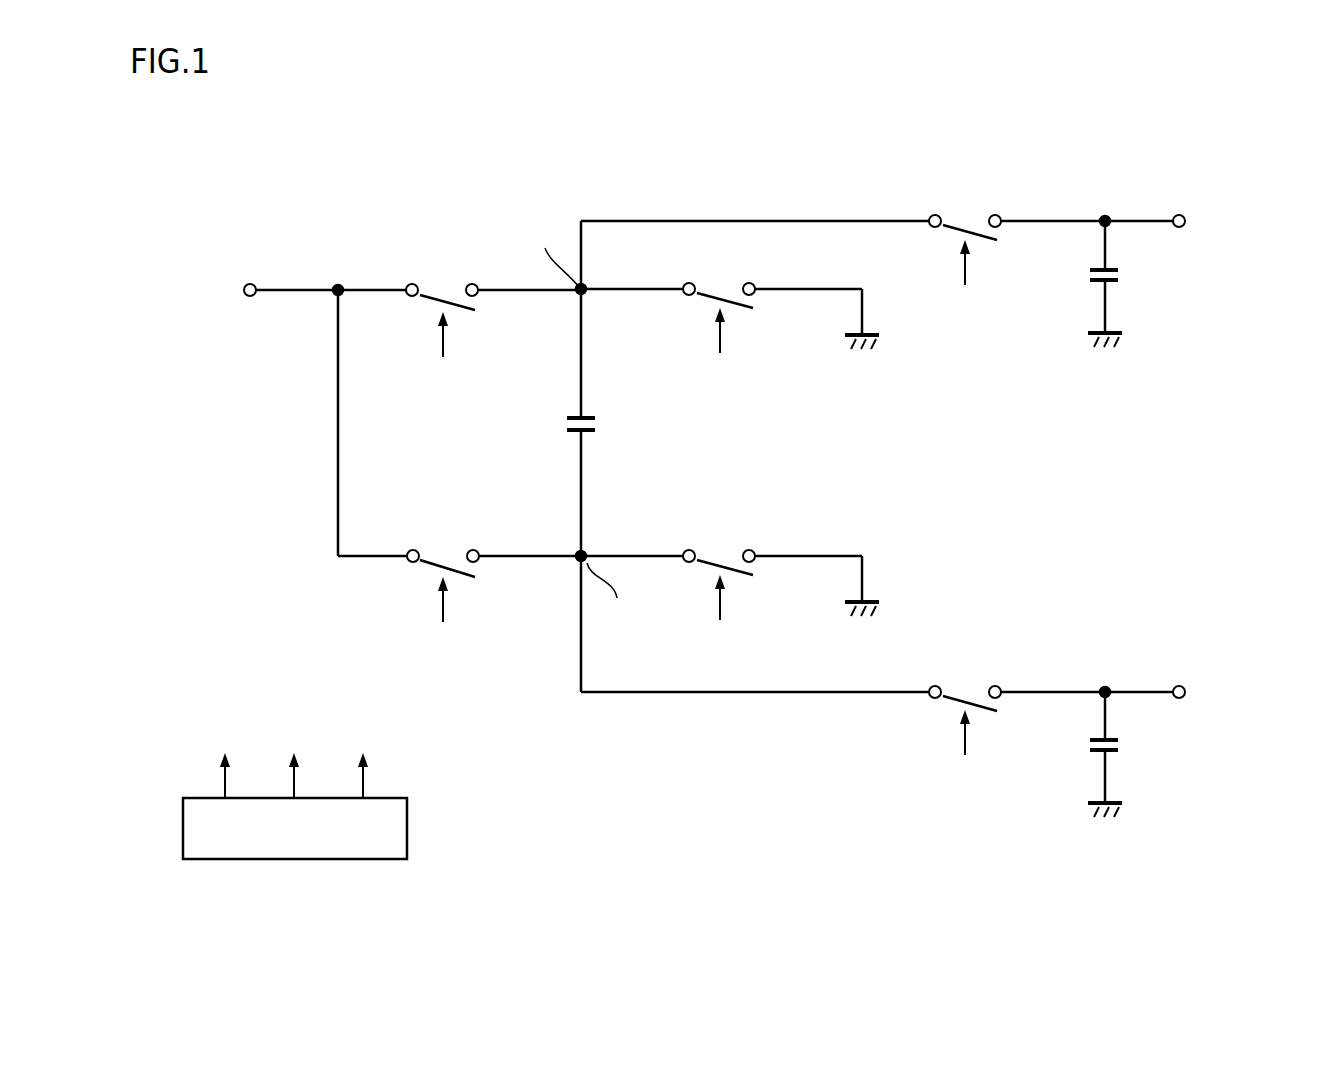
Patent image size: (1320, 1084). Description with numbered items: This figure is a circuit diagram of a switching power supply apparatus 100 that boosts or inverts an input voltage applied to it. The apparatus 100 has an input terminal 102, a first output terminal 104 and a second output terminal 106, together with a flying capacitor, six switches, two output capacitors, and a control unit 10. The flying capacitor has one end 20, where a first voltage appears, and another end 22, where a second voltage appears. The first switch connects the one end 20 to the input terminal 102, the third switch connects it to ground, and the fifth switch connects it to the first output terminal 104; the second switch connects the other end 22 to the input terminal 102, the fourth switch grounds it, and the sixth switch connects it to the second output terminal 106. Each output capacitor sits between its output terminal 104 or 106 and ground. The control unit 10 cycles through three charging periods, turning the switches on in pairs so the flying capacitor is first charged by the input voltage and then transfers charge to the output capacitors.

The switching power supply apparatus 100 is at (758, 957).
The input terminal 102 is at (252, 282).
The first output terminal 104 is at (1176, 210).
The second output terminal 106 is at (1176, 680).
The one end of the flying capacitor 20 is at (580, 353).
The other end of the flying capacitor 22 is at (578, 490).
The control unit 10 is at (293, 861).